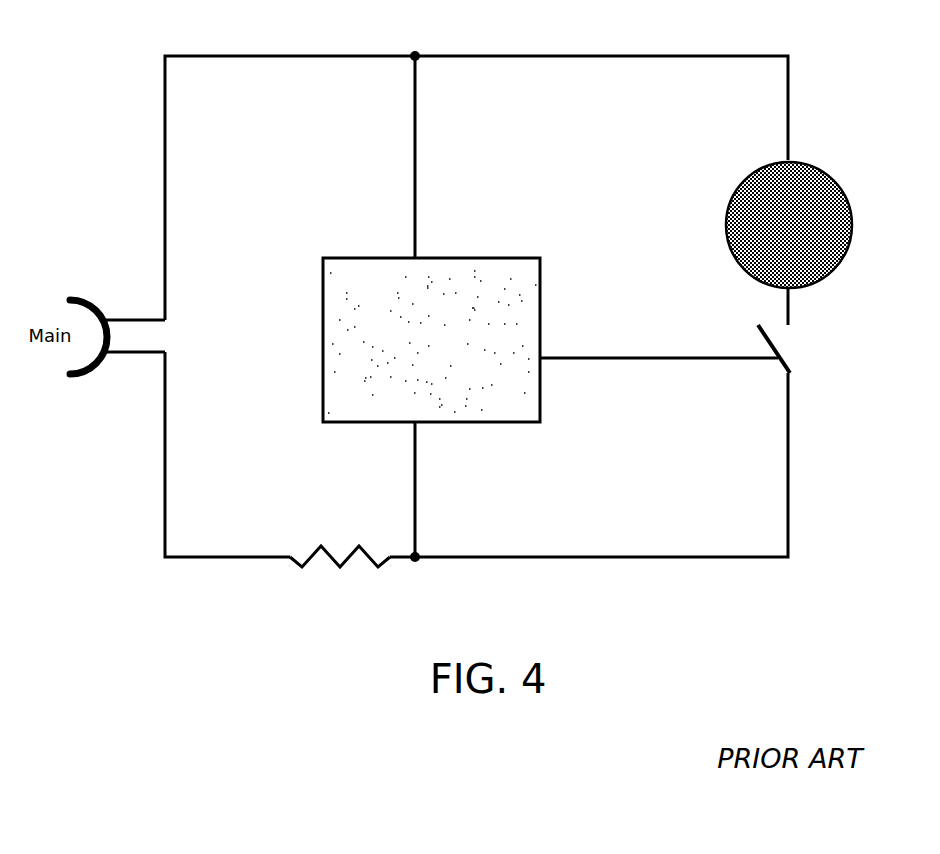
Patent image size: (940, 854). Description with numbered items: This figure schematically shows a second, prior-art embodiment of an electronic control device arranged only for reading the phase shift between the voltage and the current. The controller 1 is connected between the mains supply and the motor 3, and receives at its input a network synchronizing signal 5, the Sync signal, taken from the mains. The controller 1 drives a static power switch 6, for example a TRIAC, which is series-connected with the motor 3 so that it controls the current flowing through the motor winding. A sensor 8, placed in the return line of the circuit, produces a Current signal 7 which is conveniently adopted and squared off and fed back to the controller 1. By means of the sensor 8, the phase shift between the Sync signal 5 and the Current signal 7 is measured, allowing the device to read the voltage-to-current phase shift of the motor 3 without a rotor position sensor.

The controller 1 is at (550, 340).
The motor 3 is at (843, 207).
The network synchronizing signal 5 is at (383, 157).
The static power switch 6 is at (772, 377).
The current signal 7 is at (457, 489).
The sensor 8 is at (342, 569).